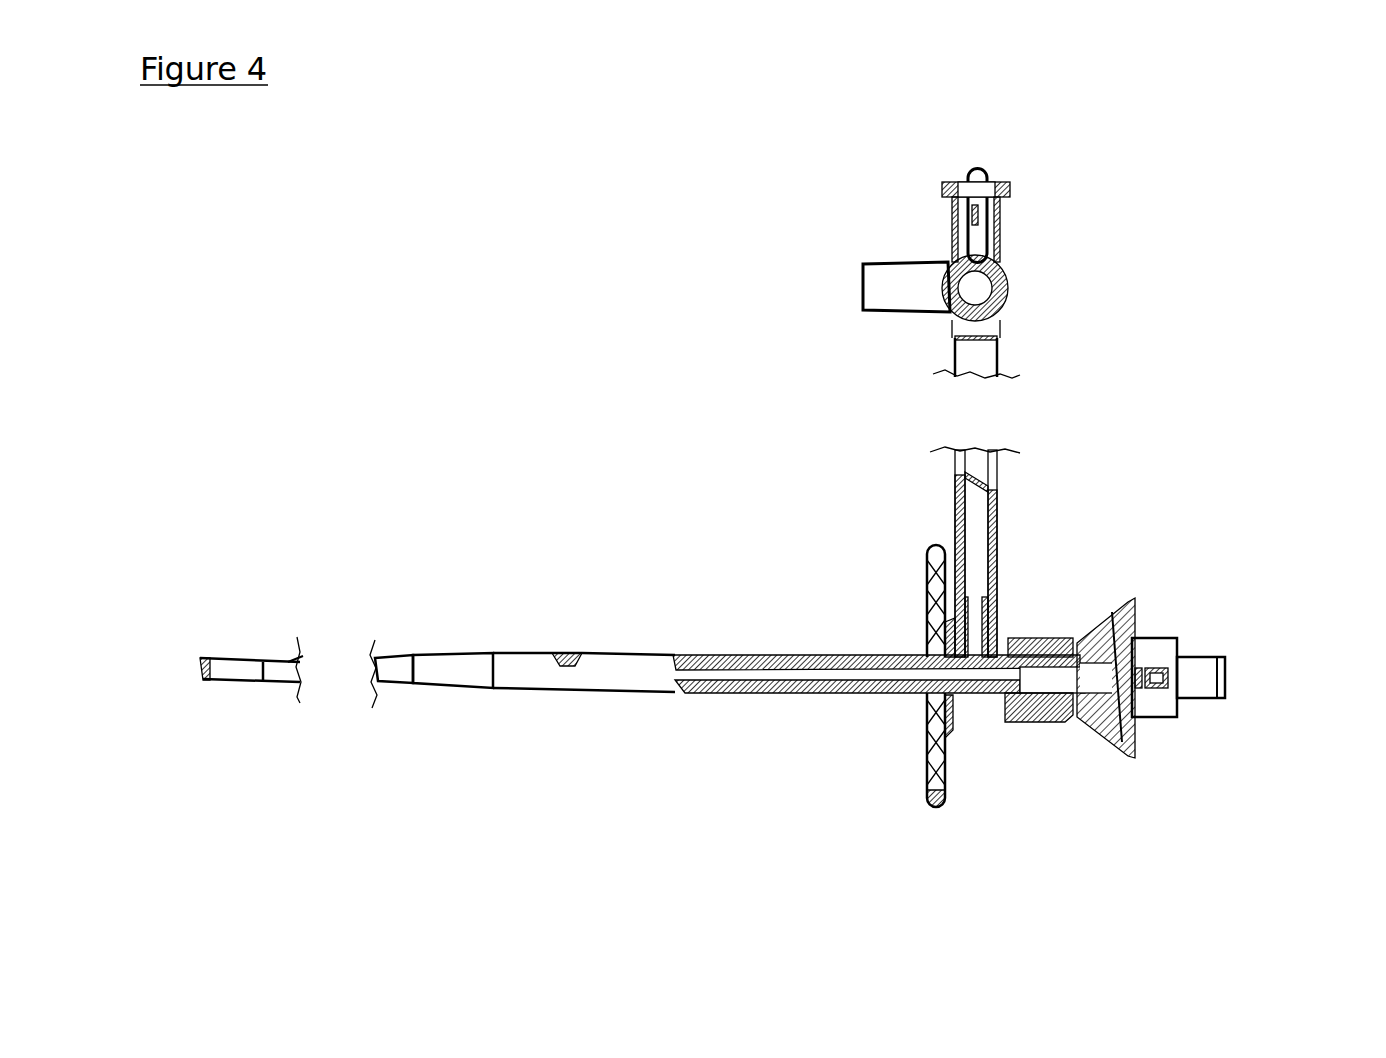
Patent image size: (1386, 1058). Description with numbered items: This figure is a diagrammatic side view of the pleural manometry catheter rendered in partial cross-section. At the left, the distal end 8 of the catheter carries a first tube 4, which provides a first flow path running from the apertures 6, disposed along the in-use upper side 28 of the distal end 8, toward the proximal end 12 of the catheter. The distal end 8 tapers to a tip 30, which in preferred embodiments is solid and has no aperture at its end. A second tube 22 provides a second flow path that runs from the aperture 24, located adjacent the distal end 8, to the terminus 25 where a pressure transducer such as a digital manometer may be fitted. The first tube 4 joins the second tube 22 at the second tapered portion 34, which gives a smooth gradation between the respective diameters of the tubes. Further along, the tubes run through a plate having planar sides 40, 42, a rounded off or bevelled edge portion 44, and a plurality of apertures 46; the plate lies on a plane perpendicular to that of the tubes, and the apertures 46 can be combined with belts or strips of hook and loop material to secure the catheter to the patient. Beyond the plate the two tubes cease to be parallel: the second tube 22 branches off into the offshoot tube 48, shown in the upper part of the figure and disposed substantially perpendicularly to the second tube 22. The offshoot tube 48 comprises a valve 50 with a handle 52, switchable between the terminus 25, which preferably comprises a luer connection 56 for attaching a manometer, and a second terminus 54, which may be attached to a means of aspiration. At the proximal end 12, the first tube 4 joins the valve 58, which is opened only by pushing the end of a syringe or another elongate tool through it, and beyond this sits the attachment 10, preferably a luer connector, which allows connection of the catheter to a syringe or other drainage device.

The first tube 4 is at (402, 678).
The apertures 6 is at (278, 663).
The distal end 8 is at (238, 663).
The attachment 10 is at (1197, 672).
The proximal end 12 is at (1228, 673).
The second tube 22 is at (637, 668).
The aperture 24 is at (570, 663).
The terminus 25 is at (1012, 192).
The upper side 28 is at (400, 663).
The tip 30 is at (202, 685).
The second tapered portion 34 is at (457, 668).
The planar side 40 is at (927, 750).
The planar side 42 is at (927, 715).
The bevelled edge portion 44 is at (938, 808).
The apertures 46 is at (927, 770).
The offshoot tube 48 is at (983, 360).
The valve 50 is at (1000, 245).
The handle 52 is at (973, 212).
The second terminus 54 is at (883, 290).
The luer connection 56 is at (997, 180).
The valve 58 is at (1120, 637).